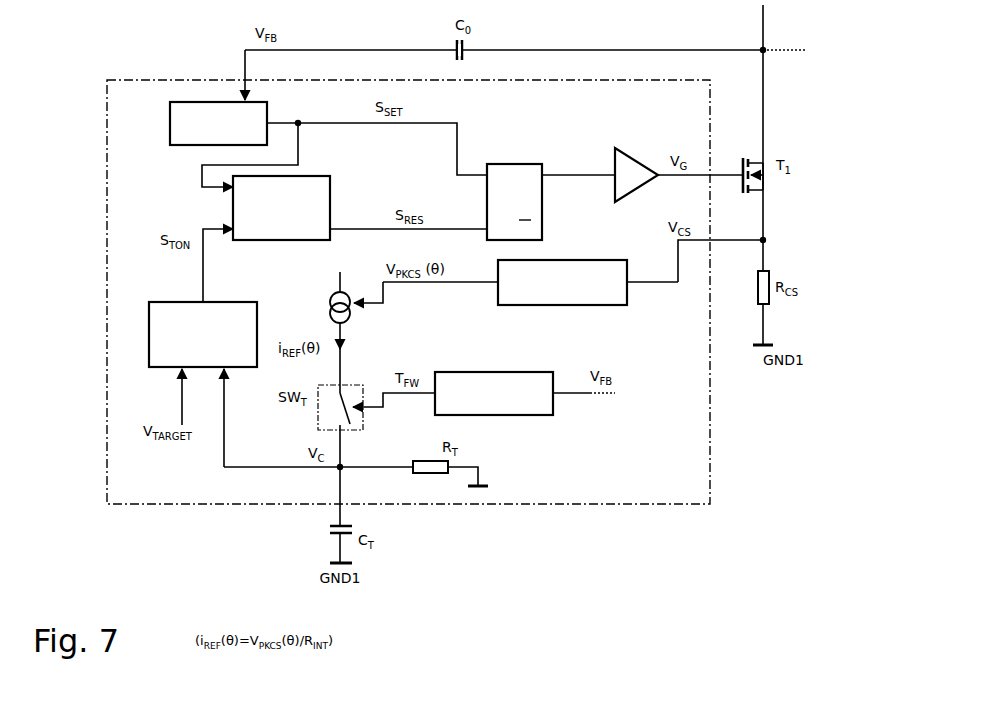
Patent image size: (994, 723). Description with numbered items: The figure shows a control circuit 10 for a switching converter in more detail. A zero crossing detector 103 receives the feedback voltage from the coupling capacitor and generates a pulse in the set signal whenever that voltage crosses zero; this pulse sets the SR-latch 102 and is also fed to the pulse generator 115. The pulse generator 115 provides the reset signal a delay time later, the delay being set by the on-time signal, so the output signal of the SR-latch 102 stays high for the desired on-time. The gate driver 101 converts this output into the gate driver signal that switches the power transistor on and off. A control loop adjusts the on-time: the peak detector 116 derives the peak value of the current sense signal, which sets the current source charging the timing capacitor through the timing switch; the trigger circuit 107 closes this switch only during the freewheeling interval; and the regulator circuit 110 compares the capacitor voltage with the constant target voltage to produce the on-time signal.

The control circuit 10 is at (408, 284).
The zero crossing detector 103 is at (218, 123).
The pulse generator 115 is at (330, 198).
The SR-latch 102 is at (527, 146).
The gate driver 101 is at (630, 133).
The peak detector 116 is at (598, 259).
The regulator circuit 110 is at (203, 334).
The trigger circuit 107 is at (494, 393).